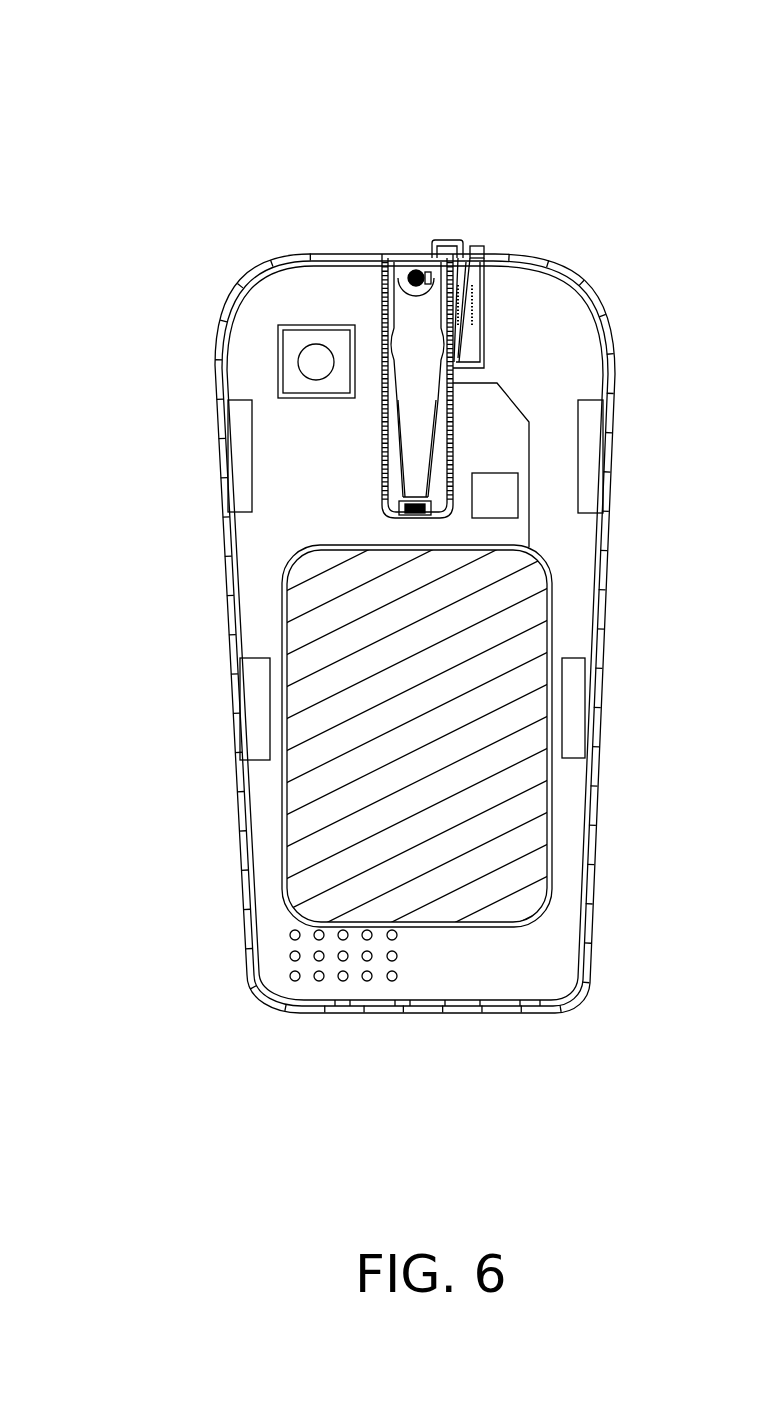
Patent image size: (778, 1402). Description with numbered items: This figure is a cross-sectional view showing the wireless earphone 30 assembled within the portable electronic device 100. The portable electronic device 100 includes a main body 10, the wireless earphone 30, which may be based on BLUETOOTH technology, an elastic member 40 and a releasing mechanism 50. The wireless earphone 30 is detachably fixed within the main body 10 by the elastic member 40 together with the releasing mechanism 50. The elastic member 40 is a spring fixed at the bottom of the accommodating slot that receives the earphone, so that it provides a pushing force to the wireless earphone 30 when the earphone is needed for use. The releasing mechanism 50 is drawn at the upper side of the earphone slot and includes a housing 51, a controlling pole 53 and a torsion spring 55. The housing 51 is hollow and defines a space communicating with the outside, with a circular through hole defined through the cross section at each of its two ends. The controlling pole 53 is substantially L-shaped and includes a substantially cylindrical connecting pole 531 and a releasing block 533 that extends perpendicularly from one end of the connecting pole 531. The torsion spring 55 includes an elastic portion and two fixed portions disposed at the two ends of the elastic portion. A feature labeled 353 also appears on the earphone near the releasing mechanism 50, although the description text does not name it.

The portable electronic device 100 is at (148, 55).
The main body 10 is at (607, 343).
The wireless earphone 30 is at (390, 256).
The ball 353 is at (415, 270).
The elastic member 40 is at (385, 519).
The releasing mechanism 50 is at (628, 150).
The housing 51 is at (478, 333).
The controlling pole 53 is at (575, 104).
The connecting pole 531 is at (463, 262).
The releasing block 533 is at (447, 250).
The torsion spring 55 is at (478, 262).